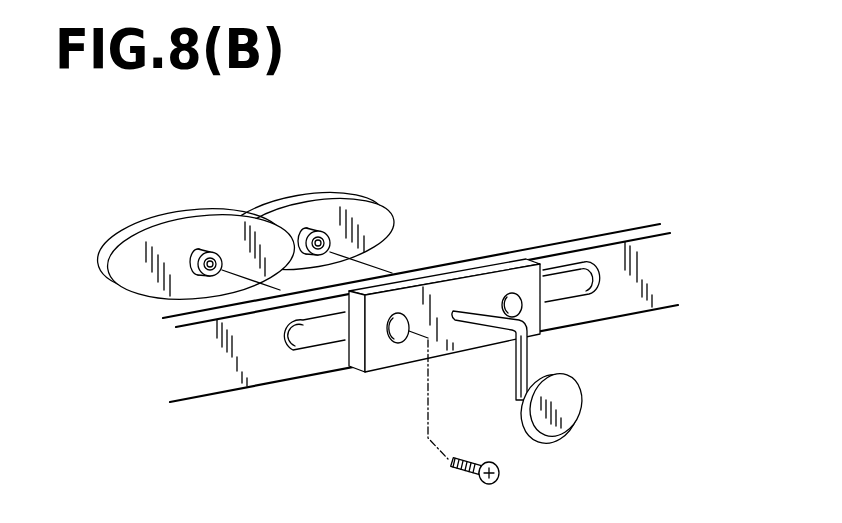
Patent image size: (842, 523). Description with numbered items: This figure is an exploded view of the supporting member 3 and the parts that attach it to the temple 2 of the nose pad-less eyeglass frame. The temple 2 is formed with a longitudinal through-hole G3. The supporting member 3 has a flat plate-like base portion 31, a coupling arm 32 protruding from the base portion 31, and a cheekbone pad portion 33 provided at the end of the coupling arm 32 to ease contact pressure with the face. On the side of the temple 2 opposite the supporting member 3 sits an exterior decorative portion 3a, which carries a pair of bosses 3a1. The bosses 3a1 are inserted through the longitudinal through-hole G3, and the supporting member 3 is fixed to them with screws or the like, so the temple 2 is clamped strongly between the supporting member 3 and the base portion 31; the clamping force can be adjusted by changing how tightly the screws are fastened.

The temple 2 is at (568, 244).
The supporting member 3 is at (543, 371).
The exterior decorative portion 3a is at (368, 220).
The bosses 3a1 is at (198, 262).
The base portion 31 is at (545, 322).
The coupling arm 32 is at (530, 352).
The cheekbone pad portion 33 is at (598, 408).
The longitudinal through-hole G3 is at (311, 333).